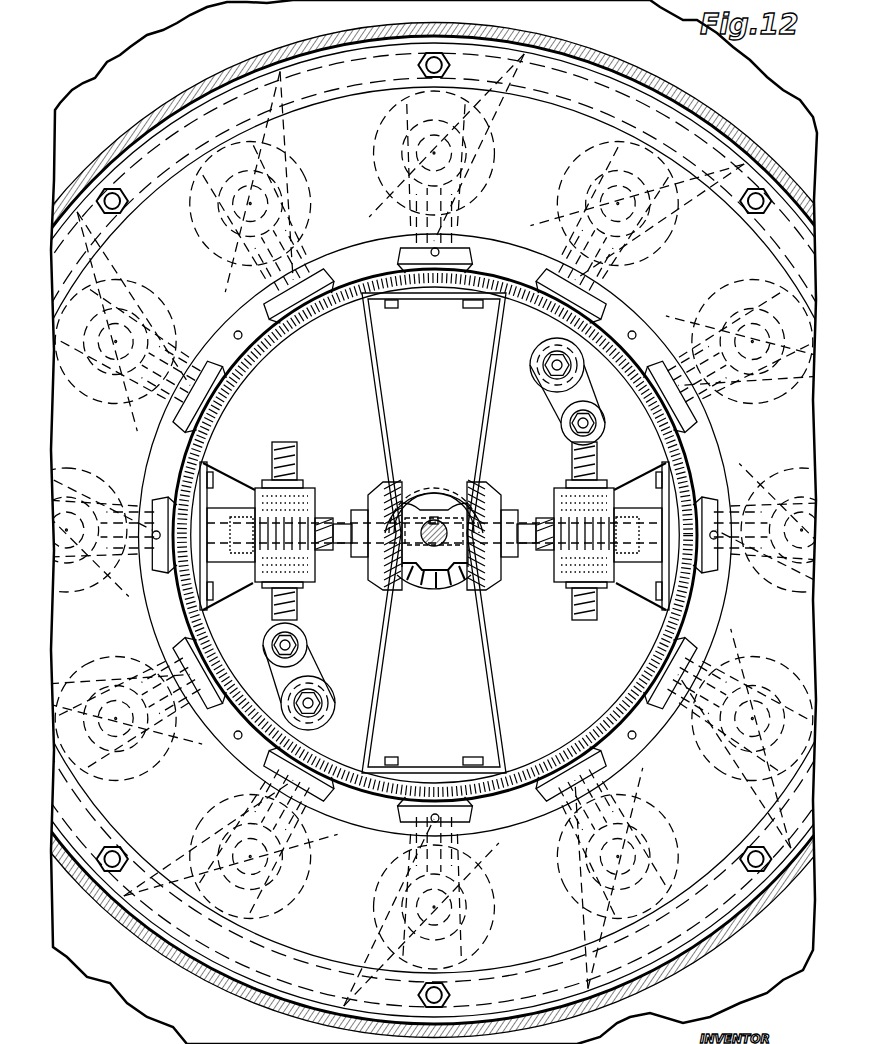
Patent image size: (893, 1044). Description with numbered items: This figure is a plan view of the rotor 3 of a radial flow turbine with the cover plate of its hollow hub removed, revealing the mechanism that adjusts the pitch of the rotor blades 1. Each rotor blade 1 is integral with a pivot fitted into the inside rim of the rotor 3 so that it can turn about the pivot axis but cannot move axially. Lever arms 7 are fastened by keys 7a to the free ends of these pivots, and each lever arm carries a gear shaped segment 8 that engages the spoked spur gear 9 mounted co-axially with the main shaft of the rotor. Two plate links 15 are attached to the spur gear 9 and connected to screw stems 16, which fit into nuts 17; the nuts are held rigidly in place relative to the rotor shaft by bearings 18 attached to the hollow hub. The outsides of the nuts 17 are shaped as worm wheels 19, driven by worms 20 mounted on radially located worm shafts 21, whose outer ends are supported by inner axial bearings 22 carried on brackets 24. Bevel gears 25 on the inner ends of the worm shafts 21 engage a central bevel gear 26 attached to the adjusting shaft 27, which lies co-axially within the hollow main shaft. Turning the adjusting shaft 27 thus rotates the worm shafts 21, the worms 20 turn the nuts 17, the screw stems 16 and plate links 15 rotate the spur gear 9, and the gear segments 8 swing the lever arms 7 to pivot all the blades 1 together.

The rotor blade 1 is at (270, 140).
The rotor 3 is at (132, 858).
The lever arm 7 is at (615, 270).
The key 7a is at (480, 932).
The gear shaped segment 8 is at (557, 312).
The spoked spur gear 9 is at (240, 350).
The plate link 15 is at (558, 393).
The screw stem 16 is at (297, 458).
The nut 17 is at (303, 480).
The bearing 18 is at (252, 483).
The worm wheel 19 is at (318, 516).
The worm 20 is at (352, 556).
The worm shaft 21 is at (345, 537).
The inner axial bearing 22 is at (428, 525).
The bracket 24 is at (378, 407).
The bevel gear 25 is at (391, 483).
The bevel gear 26 is at (428, 593).
The adjusting shaft 27 is at (418, 596).